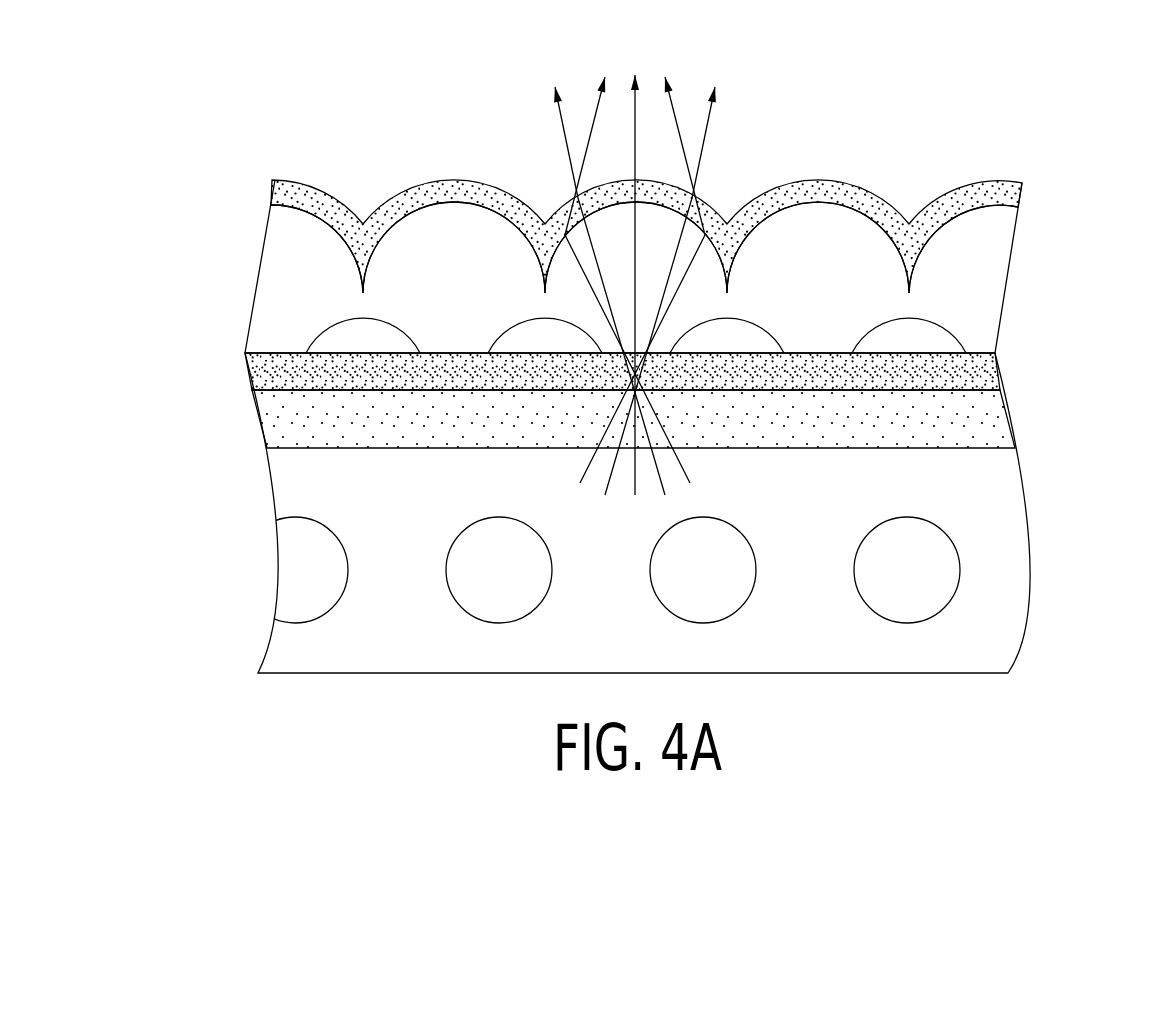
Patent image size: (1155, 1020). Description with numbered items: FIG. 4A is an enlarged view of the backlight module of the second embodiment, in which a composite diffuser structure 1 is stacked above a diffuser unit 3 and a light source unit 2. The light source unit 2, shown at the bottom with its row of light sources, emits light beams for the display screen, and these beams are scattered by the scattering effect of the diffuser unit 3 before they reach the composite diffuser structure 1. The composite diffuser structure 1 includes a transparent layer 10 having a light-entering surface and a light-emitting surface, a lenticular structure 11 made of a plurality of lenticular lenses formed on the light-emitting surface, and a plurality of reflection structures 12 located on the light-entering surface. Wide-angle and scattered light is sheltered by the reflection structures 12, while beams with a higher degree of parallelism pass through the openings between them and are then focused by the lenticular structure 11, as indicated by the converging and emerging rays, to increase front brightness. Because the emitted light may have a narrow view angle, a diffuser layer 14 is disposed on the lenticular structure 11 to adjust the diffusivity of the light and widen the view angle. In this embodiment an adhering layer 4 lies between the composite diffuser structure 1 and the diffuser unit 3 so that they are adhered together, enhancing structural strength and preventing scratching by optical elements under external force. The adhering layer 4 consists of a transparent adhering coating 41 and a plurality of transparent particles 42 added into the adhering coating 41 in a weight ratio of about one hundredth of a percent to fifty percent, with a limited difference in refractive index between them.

The composite diffuser structure 1 is at (569, 227).
The transparent layer 10 is at (282, 288).
The lenticular structure 11 is at (285, 233).
The reflection structures 12 is at (338, 333).
The diffuser layer 14 is at (837, 188).
The light source unit 2 is at (1005, 558).
The diffuser unit 3 is at (660, 389).
The adhering layer 4 is at (682, 385).
The adhering coating 41 is at (982, 363).
The transparent particles 42 is at (967, 373).